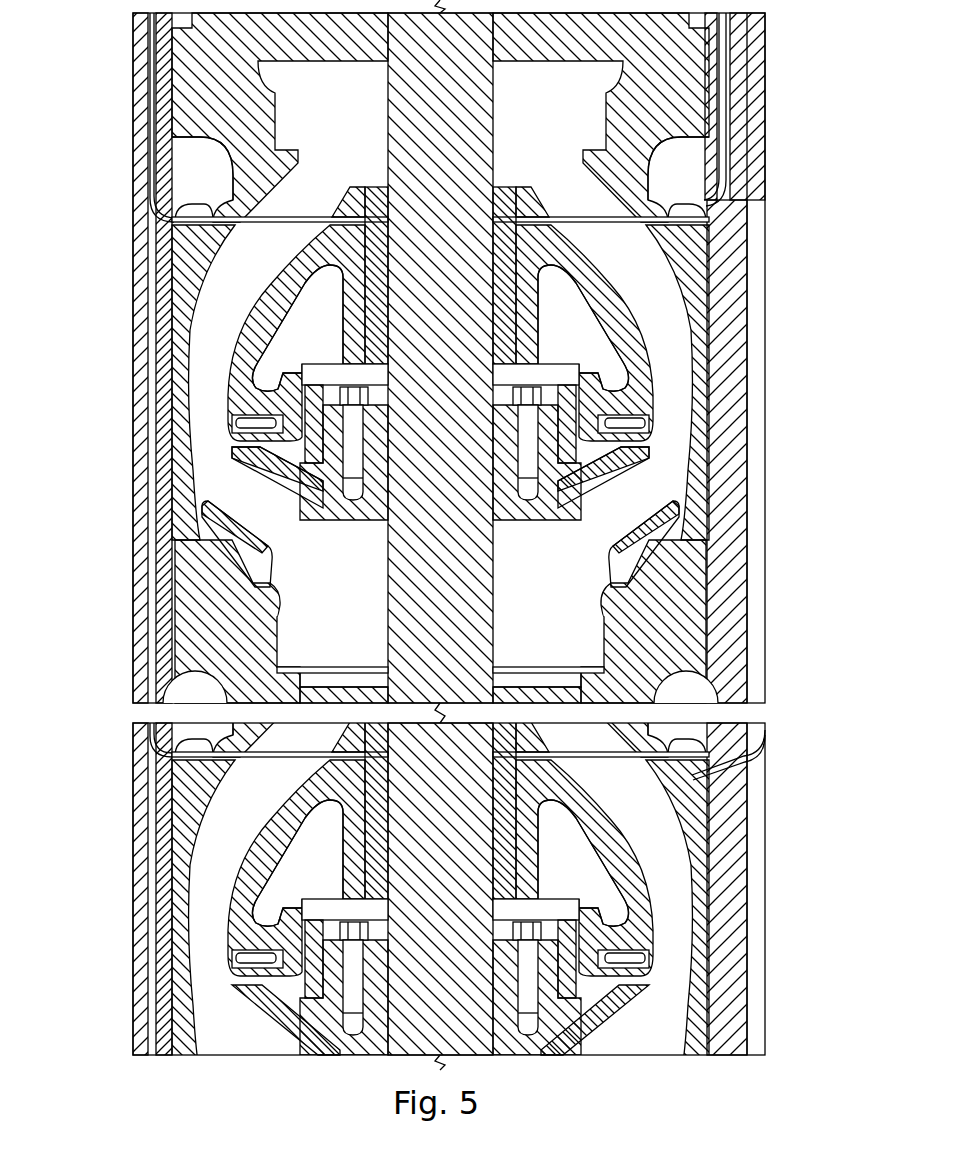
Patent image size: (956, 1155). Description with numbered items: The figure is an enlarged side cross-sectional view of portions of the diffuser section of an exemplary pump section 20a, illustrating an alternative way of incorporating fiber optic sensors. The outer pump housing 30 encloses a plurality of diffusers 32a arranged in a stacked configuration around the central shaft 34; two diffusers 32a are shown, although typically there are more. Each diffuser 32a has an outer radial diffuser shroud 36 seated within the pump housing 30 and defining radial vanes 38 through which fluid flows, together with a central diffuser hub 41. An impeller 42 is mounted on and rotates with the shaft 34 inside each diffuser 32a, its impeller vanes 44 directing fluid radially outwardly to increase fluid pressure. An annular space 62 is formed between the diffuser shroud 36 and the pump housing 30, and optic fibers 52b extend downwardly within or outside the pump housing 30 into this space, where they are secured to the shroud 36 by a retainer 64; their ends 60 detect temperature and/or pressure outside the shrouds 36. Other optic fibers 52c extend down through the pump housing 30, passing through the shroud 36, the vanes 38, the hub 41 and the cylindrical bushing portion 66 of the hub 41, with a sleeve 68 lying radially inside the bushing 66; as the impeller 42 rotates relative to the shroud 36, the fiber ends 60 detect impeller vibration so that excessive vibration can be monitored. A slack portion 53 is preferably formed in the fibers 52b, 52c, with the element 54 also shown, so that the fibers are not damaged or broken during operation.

The pump section 20a is at (128, 150).
The outer pump housing 30 is at (140, 250).
The diffuser 32a is at (158, 400).
The central shaft 34 is at (498, 62).
The diffuser shroud 36 is at (745, 276).
The radial vanes 38 is at (212, 318).
The diffuser hub 41 is at (340, 213).
The impeller 42 is at (212, 523).
The impeller vanes 44 is at (300, 478).
The optic fibers 52b is at (742, 113).
The optic fibers 52c is at (148, 62).
The slack portion 53 is at (185, 214).
The tube 54 is at (152, 90).
The optic fiber ends 60 is at (392, 218).
The annular space 62 is at (190, 165).
The retainer 64 is at (705, 222).
The cylindrical bushing portion 66 is at (342, 337).
The sleeve 68 is at (362, 303).